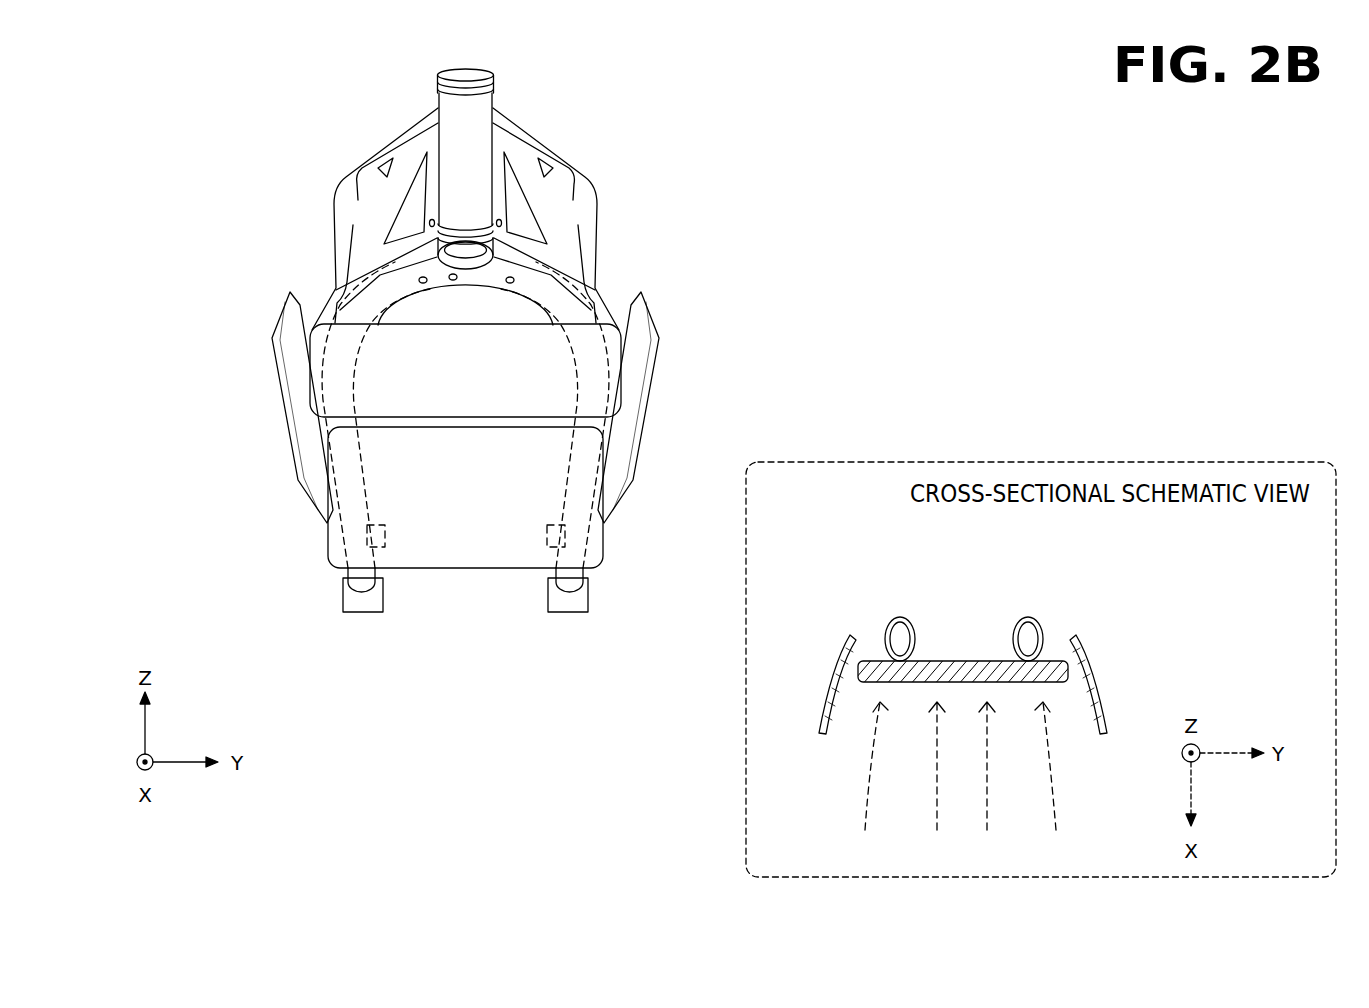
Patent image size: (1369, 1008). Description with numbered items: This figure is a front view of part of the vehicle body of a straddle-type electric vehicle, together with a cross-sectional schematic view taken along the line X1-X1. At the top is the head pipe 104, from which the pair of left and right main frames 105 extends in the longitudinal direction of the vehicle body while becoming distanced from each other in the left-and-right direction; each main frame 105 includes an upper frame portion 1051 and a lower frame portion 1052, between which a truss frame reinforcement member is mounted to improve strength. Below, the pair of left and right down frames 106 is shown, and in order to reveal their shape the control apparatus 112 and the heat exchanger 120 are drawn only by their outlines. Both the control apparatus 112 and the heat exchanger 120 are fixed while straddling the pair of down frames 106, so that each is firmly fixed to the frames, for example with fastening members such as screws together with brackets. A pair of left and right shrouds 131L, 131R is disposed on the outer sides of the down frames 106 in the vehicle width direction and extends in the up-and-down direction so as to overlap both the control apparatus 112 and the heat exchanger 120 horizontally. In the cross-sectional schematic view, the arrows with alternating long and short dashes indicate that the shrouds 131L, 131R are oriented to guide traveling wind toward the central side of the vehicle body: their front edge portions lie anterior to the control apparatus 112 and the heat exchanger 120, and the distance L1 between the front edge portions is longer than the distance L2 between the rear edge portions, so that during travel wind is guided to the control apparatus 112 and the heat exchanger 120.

The head pipe 104 is at (440, 105).
The main frame 105 is at (545, 254).
The upper frame portion 1051 is at (586, 170).
The lower frame portion 1052 is at (607, 293).
The down frame 106 is at (328, 427).
The control apparatus 112 is at (492, 568).
The heat exchanger 120 is at (963, 663).
The right shroud 131R is at (278, 317).
The left shroud 131L is at (665, 330).
The line X1- X1 is at (258, 368).
The distance L1 is at (832, 742).
The distance L2 is at (828, 610).